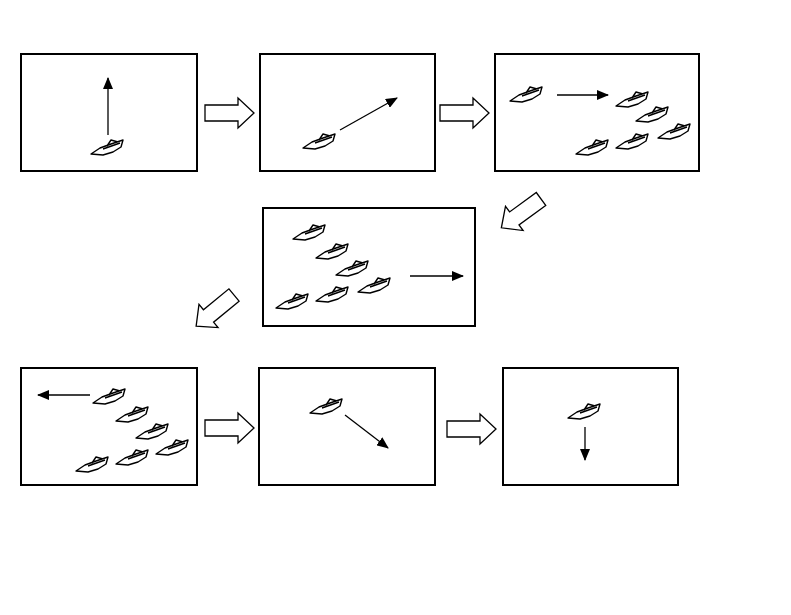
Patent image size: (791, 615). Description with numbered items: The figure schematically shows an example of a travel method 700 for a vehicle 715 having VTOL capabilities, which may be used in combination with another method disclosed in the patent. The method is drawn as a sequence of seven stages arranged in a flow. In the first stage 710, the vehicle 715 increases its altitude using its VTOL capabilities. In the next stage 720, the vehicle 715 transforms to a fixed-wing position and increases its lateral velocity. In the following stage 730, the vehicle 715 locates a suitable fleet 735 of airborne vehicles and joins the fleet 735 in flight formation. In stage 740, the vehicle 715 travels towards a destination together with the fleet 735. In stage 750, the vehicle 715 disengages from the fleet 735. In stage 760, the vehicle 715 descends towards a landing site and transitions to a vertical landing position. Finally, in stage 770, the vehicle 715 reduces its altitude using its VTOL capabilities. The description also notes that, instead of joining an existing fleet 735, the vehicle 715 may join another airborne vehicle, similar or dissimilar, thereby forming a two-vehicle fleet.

The travel method 700 is at (376, 540).
The increasing altitude stage 710 is at (180, 84).
The vehicle 715 is at (108, 147).
The transforming to fixed-wing position stage 720 is at (417, 85).
The joining fleet stage 730 is at (689, 83).
The fleet 735 is at (634, 123).
The travelling with fleet stage 740 is at (459, 238).
The disengaging from fleet stage 750 is at (190, 398).
The descending and transitioning stage 760 is at (424, 395).
The reducing altitude stage 770 is at (664, 395).